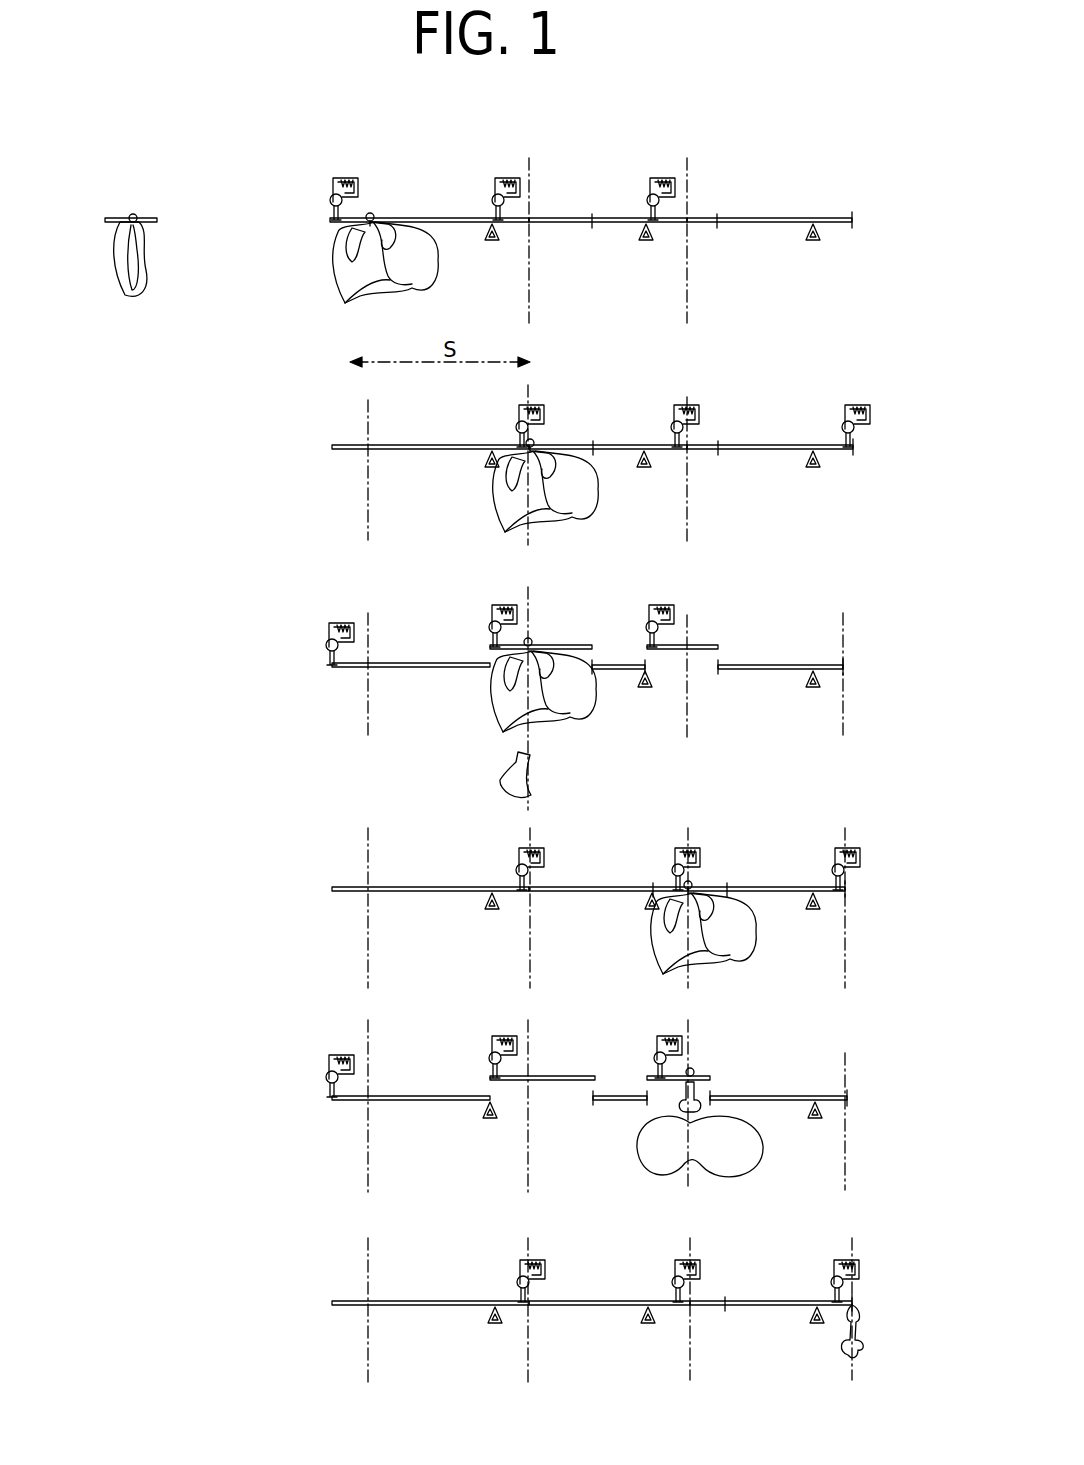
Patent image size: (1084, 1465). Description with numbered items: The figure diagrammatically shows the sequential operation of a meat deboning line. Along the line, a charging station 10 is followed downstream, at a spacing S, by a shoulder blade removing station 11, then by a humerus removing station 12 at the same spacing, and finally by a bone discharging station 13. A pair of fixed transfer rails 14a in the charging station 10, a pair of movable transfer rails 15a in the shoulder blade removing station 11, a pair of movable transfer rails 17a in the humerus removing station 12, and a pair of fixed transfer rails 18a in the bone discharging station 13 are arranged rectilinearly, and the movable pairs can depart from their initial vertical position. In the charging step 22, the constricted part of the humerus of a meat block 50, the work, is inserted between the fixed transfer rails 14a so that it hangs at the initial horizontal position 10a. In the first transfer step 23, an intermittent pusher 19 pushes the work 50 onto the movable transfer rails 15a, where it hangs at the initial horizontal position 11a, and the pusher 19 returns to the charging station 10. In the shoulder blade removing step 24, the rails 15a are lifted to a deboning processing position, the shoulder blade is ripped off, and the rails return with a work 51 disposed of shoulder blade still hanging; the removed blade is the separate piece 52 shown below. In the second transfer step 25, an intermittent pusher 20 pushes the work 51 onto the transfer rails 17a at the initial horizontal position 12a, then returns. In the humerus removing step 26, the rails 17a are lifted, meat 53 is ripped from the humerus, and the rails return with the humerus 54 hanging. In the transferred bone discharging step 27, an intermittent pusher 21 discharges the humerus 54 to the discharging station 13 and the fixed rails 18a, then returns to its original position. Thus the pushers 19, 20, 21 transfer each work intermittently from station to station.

The charging station 10 is at (345, 169).
The shoulder blade removing station 11 is at (508, 169).
The humerus removing station 12 is at (669, 169).
The bone discharging station 13 is at (831, 171).
The initial horizontal position 10a is at (373, 214).
The initial horizontal position 11a is at (536, 442).
The initial horizontal position 12a is at (694, 883).
The fixed transfer rails 14a is at (411, 218).
The movable transfer rails 15a is at (551, 218).
The movable transfer rails 17a is at (703, 218).
The fixed transfer rails 18a is at (848, 218).
The intermittent pusher 19 is at (333, 182).
The intermittent pusher 20 is at (495, 182).
The intermittent pusher 21 is at (650, 182).
The charging step 22 is at (207, 228).
The first transfer step 23 is at (175, 461).
The shoulder blade removing step 24 is at (175, 683).
The second transfer step 25 is at (175, 903).
The humerus removing step 26 is at (175, 1105).
The transferred bone discharging step 27 is at (172, 1313).
The meat block 50 is at (122, 286).
The work disposed of shoulder blade 51 is at (575, 718).
The shoulder blade 52 is at (538, 782).
The meat 53 is at (738, 1178).
The humerus 54 is at (680, 1090).